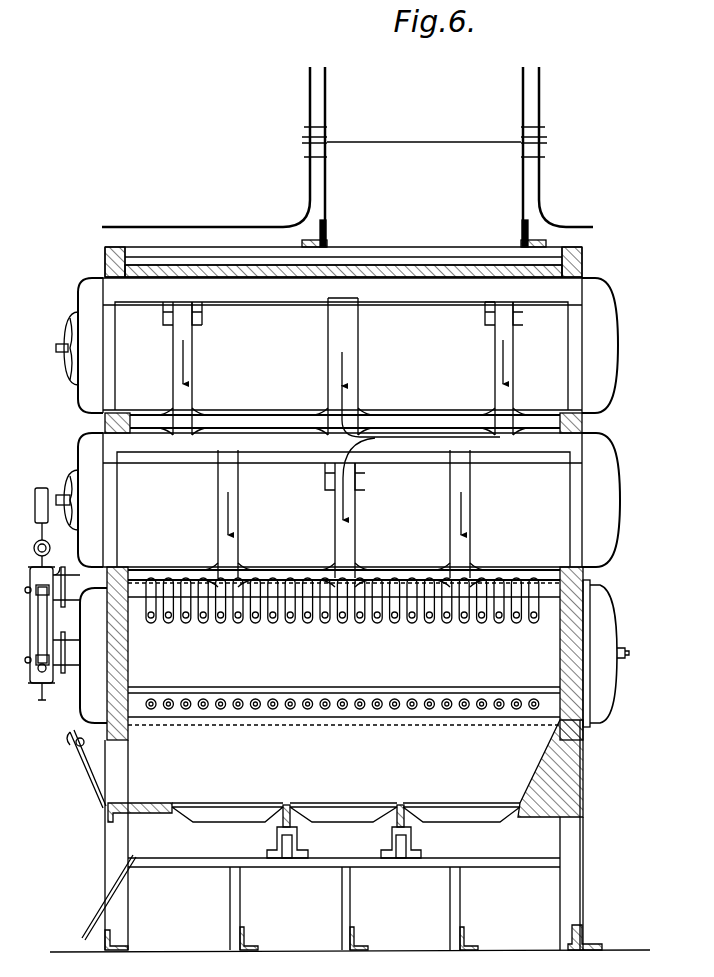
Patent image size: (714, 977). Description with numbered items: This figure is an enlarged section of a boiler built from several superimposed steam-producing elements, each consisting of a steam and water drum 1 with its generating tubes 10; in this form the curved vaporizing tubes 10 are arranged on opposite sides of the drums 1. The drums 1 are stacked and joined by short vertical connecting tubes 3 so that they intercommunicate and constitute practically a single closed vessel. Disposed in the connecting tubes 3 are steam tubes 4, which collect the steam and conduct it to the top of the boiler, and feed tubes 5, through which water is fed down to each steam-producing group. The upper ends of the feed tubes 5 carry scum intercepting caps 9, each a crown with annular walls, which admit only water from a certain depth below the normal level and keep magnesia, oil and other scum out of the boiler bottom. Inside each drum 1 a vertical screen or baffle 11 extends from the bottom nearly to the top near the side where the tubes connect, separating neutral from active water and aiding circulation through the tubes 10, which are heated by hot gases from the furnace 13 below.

The steam and water drum 1 is at (605, 321).
The short vertical connecting tube 3 is at (585, 415).
The steam collecting tube 4 is at (358, 385).
The feed tube 5 is at (193, 385).
The scum intercepting cap 9 is at (203, 326).
The generating tube 10 is at (323, 606).
The vertical screen or baffle 11 is at (338, 500).
The furnace 13 is at (345, 814).